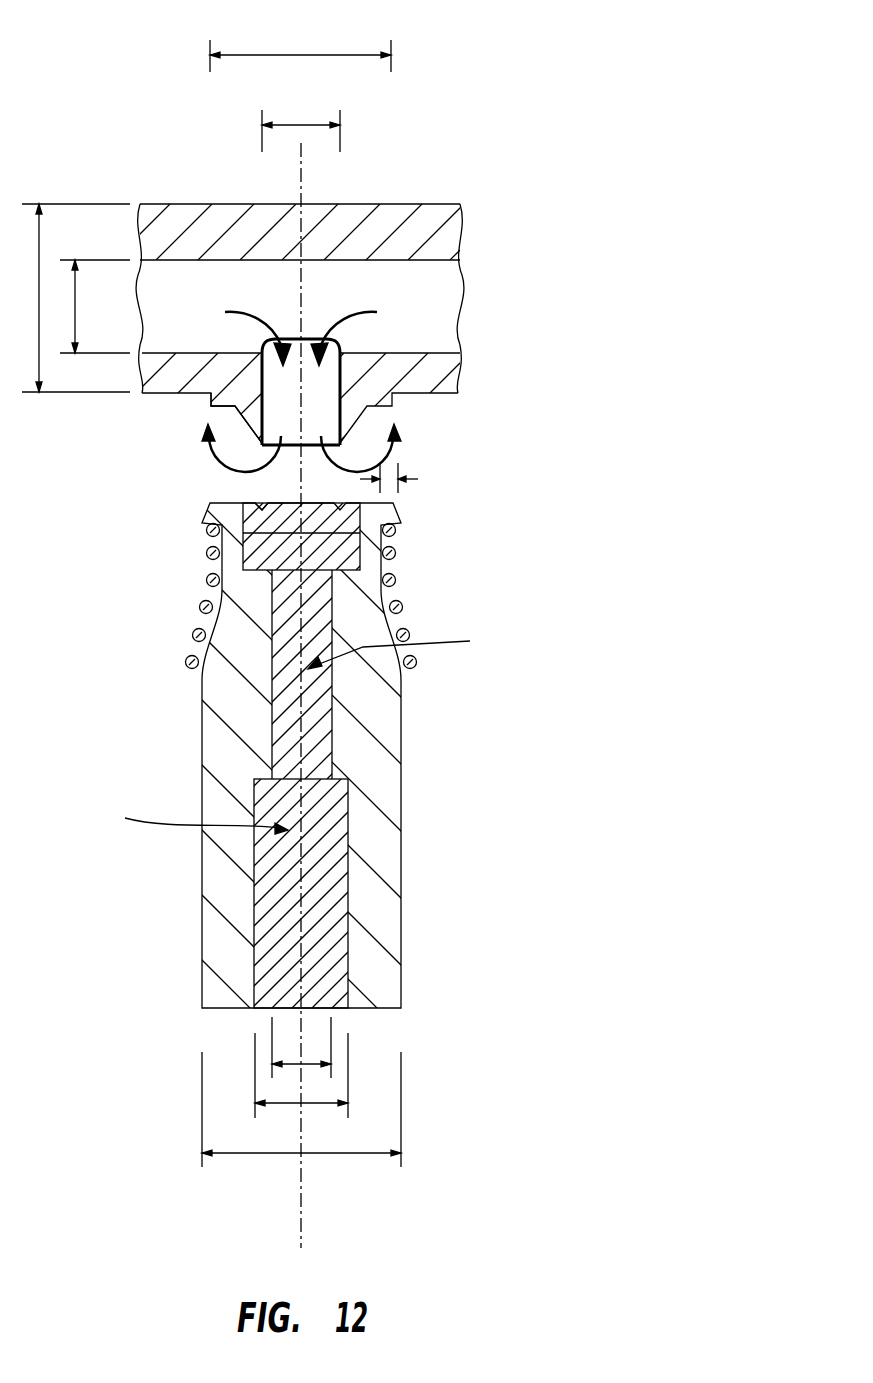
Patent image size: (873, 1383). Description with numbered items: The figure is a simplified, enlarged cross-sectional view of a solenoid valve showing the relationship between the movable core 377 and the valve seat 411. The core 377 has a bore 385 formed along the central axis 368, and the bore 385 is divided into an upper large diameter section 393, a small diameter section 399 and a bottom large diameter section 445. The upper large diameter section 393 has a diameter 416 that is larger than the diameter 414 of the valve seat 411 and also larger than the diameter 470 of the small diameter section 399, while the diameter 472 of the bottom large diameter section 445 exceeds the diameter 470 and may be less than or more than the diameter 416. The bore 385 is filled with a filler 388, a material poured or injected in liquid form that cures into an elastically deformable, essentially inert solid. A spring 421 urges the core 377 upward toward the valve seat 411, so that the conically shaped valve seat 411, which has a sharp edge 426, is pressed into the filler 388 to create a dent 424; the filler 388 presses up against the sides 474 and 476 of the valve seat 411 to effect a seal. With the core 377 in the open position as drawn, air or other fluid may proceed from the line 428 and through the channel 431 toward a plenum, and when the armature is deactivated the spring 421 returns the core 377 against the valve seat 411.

The central axis 368 is at (301, 1210).
The core 377 is at (401, 800).
The bore 385 is at (330, 924).
The filler 388 is at (333, 725).
The upper large diameter section 393 is at (352, 503).
The small diameter section 399 is at (408, 648).
The valve seat 411 is at (203, 434).
The diameter of valve seat 414 is at (299, 125).
The diameter of upper large diameter section 416 is at (299, 55).
The spring 421 is at (403, 607).
The dent 424 is at (262, 506).
The sharp edge 426 is at (240, 463).
The line 428 is at (405, 302).
The channel 431 is at (258, 382).
The bottom large diameter section 445 is at (186, 819).
The diameter of small diameter section 470 is at (290, 1067).
The diameter of bottom large diameter section 472 is at (319, 1105).
The side of valve seat 474 is at (363, 413).
The side of valve seat 476 is at (338, 386).